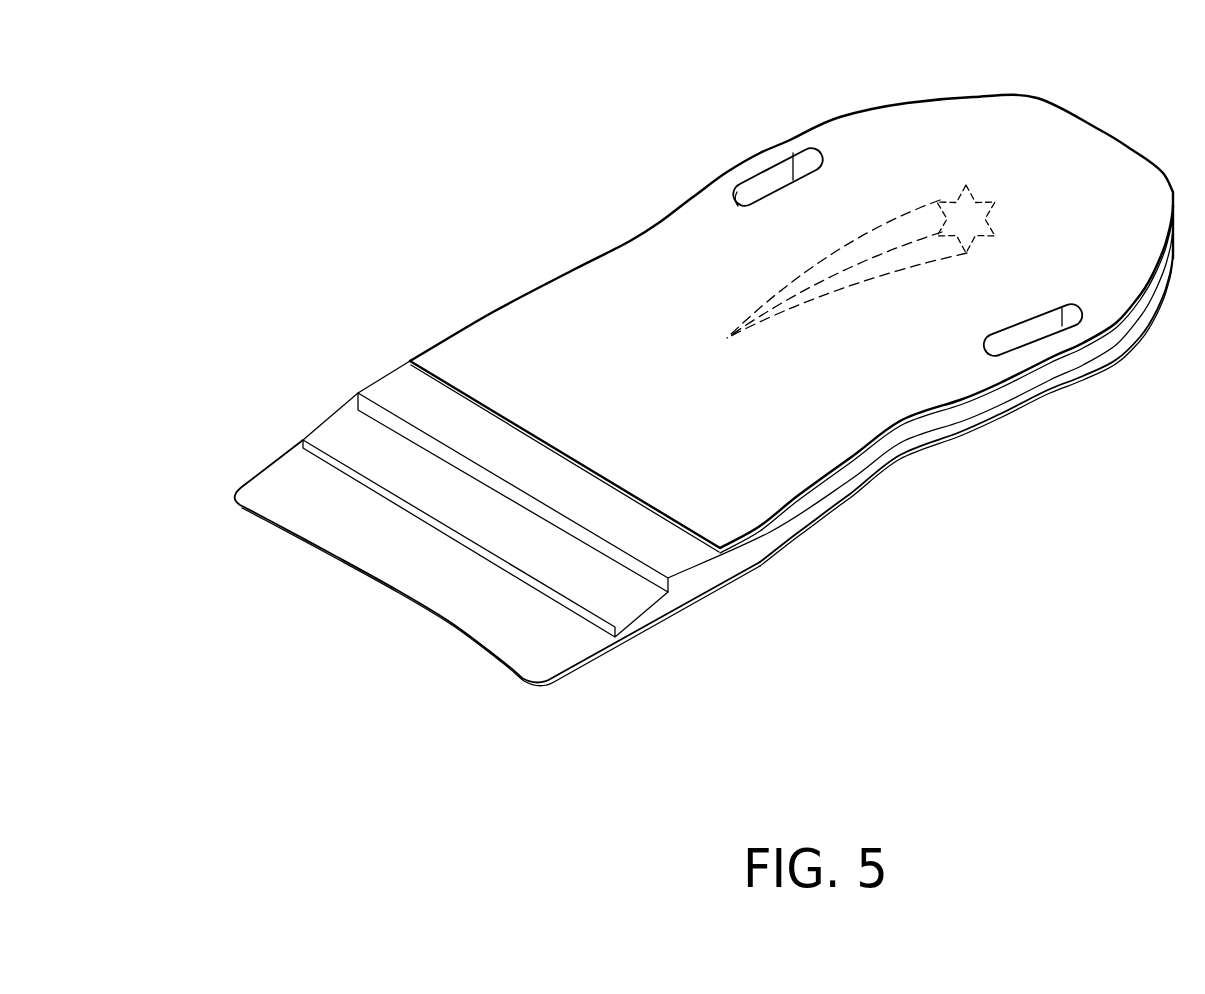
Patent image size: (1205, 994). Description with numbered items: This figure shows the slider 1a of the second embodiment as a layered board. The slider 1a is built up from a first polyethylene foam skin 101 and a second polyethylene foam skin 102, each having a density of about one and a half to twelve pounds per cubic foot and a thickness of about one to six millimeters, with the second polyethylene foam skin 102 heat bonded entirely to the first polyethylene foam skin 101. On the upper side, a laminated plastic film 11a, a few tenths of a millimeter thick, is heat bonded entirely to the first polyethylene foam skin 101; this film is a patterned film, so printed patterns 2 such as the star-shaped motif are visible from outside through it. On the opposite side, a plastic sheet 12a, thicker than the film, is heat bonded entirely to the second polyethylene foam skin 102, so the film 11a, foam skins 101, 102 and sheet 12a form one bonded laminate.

The slider 1a is at (683, 372).
The laminated plastic film 11a is at (493, 312).
The plastic sheet 12a is at (565, 657).
The first polyethylene foam skin 101 is at (407, 393).
The second polyethylene foam skin 102 is at (350, 435).
The patterns 2 is at (977, 195).